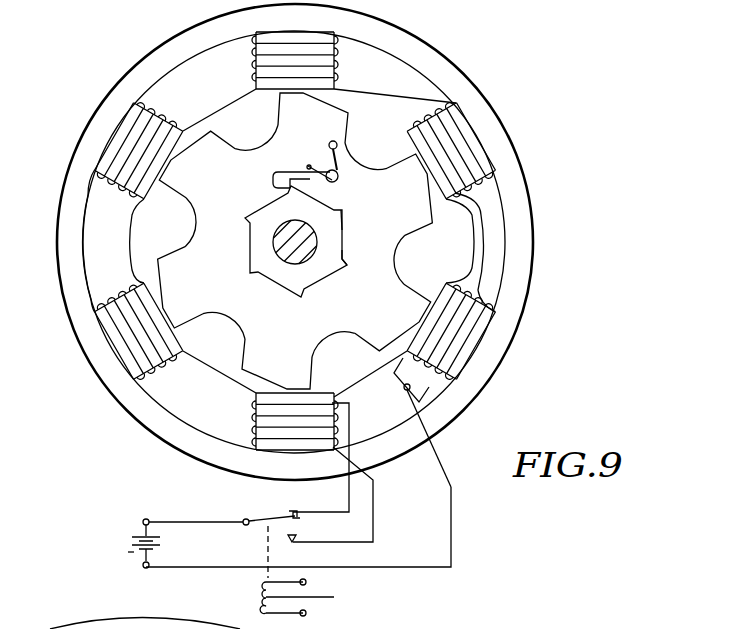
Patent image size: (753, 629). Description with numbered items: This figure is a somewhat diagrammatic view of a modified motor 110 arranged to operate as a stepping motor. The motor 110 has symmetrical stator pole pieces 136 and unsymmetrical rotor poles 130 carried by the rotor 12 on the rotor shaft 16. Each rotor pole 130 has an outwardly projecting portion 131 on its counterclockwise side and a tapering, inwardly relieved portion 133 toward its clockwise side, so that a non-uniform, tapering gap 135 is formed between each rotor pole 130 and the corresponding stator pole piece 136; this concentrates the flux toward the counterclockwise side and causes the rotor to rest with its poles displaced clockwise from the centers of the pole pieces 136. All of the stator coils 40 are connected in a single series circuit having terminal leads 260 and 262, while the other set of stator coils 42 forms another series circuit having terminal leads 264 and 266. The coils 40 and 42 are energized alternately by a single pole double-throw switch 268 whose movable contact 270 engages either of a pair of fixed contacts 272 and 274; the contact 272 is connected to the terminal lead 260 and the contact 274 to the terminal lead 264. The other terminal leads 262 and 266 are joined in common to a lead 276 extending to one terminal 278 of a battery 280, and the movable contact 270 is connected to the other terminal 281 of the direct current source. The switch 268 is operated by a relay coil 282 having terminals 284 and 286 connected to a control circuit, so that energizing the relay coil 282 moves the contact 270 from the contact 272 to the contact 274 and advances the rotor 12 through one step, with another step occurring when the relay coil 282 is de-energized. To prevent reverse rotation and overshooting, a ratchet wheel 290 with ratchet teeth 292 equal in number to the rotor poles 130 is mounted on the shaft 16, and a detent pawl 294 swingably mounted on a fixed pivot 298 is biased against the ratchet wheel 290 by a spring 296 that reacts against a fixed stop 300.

The rotor 12 is at (298, 320).
The rotor shaft 16 is at (301, 245).
The stator coils 40 is at (338, 44).
The stator coils 42 is at (338, 66).
The motor 110 is at (515, 63).
The rotor poles 130 is at (319, 132).
The outwardly projecting portion 131 is at (400, 150).
The tapering, inwardly relieved portion 133 is at (481, 243).
The non-uniform, tapering gap 135 is at (273, 390).
The stator pole pieces 136 is at (256, 87).
The terminal lead 260 is at (349, 496).
The terminal lead 262 is at (455, 413).
The terminal lead 264 is at (373, 525).
The terminal lead 266 is at (403, 388).
The single pole double-throw switch 268 is at (257, 514).
The movable contact 270 is at (300, 519).
The fixed contact 272 is at (290, 510).
The fixed contact 274 is at (290, 544).
The lead 276 is at (451, 558).
The terminal 278 is at (148, 569).
The battery 280 is at (160, 544).
The terminal 281 is at (149, 515).
The relay coil 282 is at (313, 570).
The terminal 284 is at (306, 582).
The terminal 286 is at (306, 613).
The ratchet wheel 290 is at (345, 222).
The ratchet teeth 292 is at (343, 270).
The detent pawl 294 is at (272, 185).
The spring 296 is at (329, 147).
The fixed pivot 298 is at (336, 184).
The fixed stop 300 is at (336, 142).